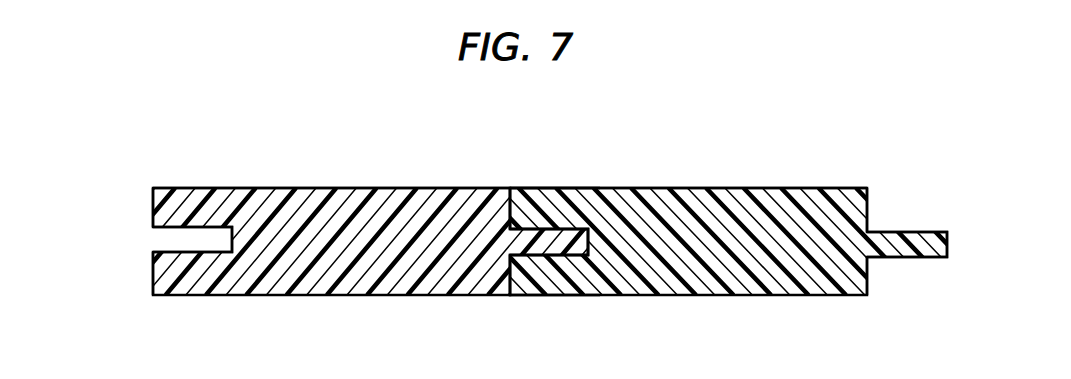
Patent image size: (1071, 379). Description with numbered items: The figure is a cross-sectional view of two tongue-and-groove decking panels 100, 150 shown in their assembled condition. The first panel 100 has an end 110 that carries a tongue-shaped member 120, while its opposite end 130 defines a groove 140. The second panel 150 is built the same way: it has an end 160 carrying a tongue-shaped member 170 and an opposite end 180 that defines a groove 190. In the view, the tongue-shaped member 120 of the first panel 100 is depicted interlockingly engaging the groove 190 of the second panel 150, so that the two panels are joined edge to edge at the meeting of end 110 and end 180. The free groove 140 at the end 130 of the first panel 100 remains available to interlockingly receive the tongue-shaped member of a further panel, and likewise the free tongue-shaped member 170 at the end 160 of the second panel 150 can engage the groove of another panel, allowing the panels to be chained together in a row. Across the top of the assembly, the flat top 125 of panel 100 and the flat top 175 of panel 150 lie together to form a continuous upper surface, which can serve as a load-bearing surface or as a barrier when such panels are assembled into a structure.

The tongue-and-groove decking panel 100 is at (378, 188).
The end 110 is at (517, 190).
The tongue-shaped member 120 is at (559, 243).
The flat top 125 is at (323, 188).
The opposite end 130 is at (152, 200).
The groove 140 is at (162, 240).
The tongue-and-groove decking panel 150 is at (712, 188).
The end 160 is at (870, 215).
The tongue-shaped member 170 is at (930, 252).
The flat top 175 is at (682, 188).
The opposite end 180 is at (505, 205).
The groove 190 is at (587, 243).